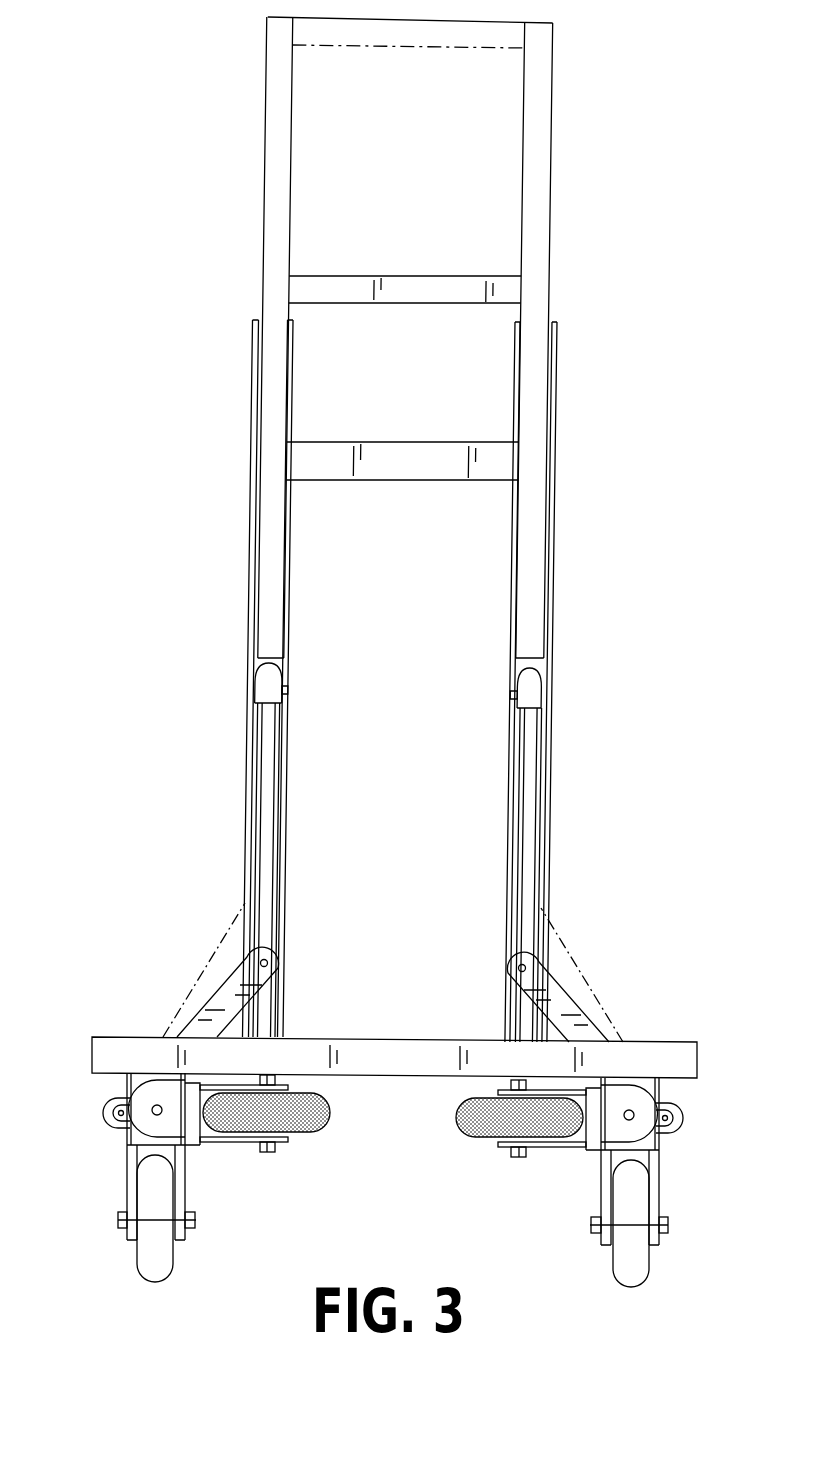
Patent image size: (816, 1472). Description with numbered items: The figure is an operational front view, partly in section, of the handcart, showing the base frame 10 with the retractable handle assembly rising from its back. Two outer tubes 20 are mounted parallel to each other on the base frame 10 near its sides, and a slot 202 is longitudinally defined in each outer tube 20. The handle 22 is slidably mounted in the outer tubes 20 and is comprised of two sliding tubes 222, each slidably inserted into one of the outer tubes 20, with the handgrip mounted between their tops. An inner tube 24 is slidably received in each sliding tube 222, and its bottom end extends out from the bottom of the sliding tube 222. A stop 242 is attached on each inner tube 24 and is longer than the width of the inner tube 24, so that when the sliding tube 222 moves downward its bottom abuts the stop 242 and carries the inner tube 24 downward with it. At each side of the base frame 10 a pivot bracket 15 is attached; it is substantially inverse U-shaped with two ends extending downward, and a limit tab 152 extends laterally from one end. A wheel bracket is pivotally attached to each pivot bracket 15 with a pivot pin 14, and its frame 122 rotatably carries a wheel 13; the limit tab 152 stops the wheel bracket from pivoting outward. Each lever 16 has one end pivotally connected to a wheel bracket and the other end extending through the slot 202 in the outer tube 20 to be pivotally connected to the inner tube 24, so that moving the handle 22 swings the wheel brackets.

The base frame 10 is at (627, 1058).
The wheel 13 is at (298, 1118).
The pivot pin 14 is at (153, 1113).
The pivot bracket 15 is at (189, 1142).
The limit tab 152 is at (123, 1090).
The lever 16 is at (220, 1000).
The outer tube 20 is at (355, 680).
The slot 202 is at (245, 883).
The handle 22 is at (395, 337).
The sliding tube 222 is at (262, 305).
The inner tube 24 is at (268, 920).
The stop 242 is at (278, 908).
The frame 122 is at (217, 1137).